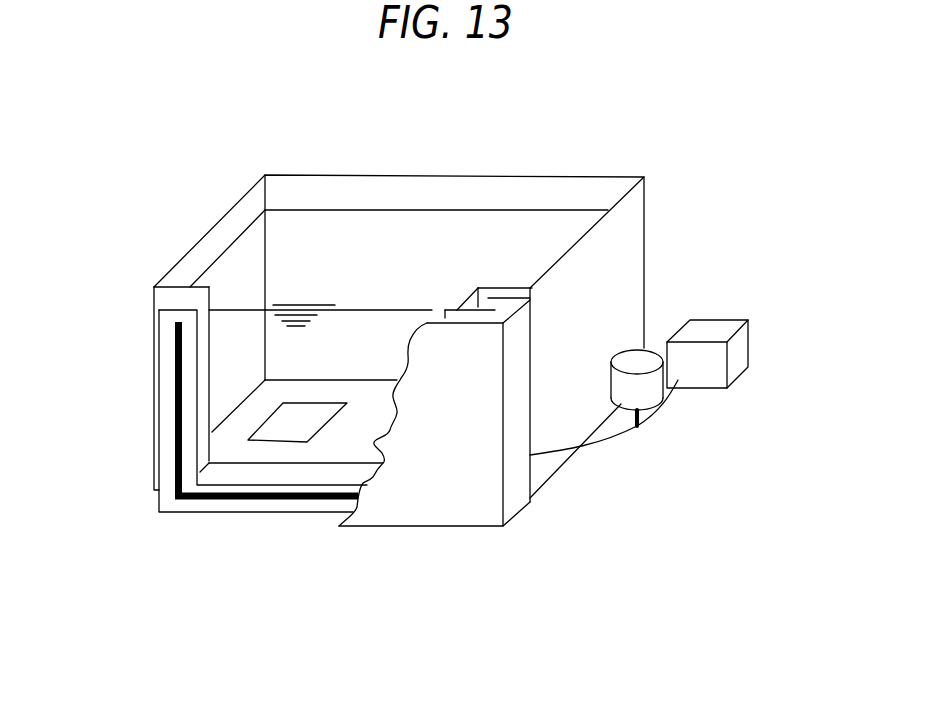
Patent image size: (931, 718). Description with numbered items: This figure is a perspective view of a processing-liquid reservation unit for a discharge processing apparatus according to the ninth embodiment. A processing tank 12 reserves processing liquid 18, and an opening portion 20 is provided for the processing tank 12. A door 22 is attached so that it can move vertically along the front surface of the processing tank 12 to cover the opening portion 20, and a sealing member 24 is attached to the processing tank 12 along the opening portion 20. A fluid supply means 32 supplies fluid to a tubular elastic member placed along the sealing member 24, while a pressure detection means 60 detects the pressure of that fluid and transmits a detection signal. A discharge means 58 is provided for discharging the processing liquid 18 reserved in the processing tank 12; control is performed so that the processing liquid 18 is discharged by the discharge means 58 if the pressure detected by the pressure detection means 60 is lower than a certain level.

The processing tank 12 is at (163, 280).
The processing liquid 18 is at (497, 225).
The opening portion 20 is at (228, 440).
The discharge means 58 is at (270, 415).
The sealing member 24 is at (227, 500).
The door 22 is at (370, 527).
The pressure detection means 60 is at (645, 346).
The fluid supply means 32 is at (750, 340).